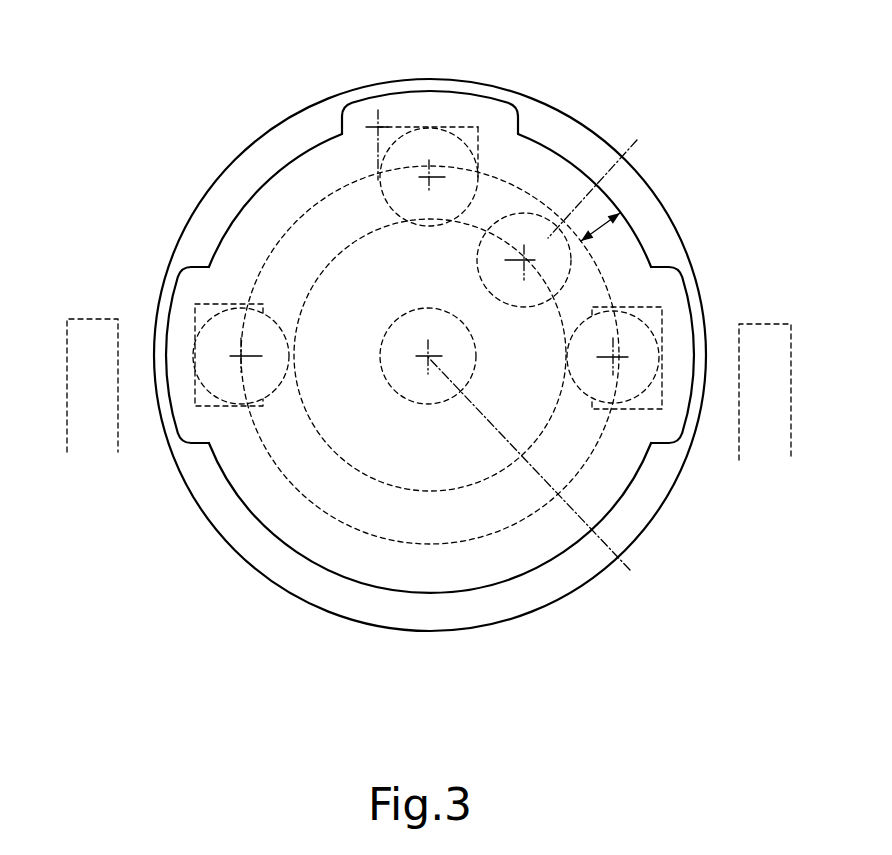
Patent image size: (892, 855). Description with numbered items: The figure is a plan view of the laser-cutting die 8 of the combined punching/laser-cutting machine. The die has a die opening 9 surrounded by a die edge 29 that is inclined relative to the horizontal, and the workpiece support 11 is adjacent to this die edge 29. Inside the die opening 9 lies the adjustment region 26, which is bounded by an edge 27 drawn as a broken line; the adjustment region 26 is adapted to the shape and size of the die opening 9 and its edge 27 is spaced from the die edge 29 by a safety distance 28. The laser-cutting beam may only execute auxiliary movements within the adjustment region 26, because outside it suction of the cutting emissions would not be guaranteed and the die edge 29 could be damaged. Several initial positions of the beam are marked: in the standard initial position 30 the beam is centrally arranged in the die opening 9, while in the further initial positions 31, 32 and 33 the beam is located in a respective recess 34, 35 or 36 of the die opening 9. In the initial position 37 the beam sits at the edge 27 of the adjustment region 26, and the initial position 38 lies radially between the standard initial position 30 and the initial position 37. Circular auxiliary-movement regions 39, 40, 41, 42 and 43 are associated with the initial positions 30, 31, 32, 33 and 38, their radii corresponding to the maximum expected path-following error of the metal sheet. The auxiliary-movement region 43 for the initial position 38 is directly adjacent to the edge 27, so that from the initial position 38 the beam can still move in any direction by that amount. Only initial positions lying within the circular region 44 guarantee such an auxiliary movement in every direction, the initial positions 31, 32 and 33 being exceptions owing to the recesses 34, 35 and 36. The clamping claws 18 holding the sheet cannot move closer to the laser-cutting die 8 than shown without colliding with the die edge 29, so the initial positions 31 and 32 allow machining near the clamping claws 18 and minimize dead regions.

The laser-cutting die 8 is at (658, 182).
The die opening 9 is at (485, 565).
The workpiece support 11 is at (450, 43).
The clamping claws 18 is at (105, 393).
The adjustment region 26 is at (335, 222).
The edge 27 is at (273, 250).
The safety distance 28 is at (612, 232).
The die edge 29 is at (185, 245).
The standard initial position 30 is at (543, 473).
The initial position 31 is at (241, 356).
The initial position 32 is at (613, 357).
The initial position 33 is at (470, 150).
The recess 34 is at (185, 308).
The recess 35 is at (684, 337).
The recess 36 is at (408, 102).
The initial position 37 is at (377, 127).
The initial position 38 is at (602, 174).
The auxiliary-movement region 39 is at (429, 405).
The auxiliary-movement region 40 is at (262, 408).
The auxiliary-movement region 41 is at (645, 322).
The auxiliary-movement region 42 is at (429, 177).
The auxiliary-movement region 43 is at (524, 260).
The circular region 44 is at (368, 470).